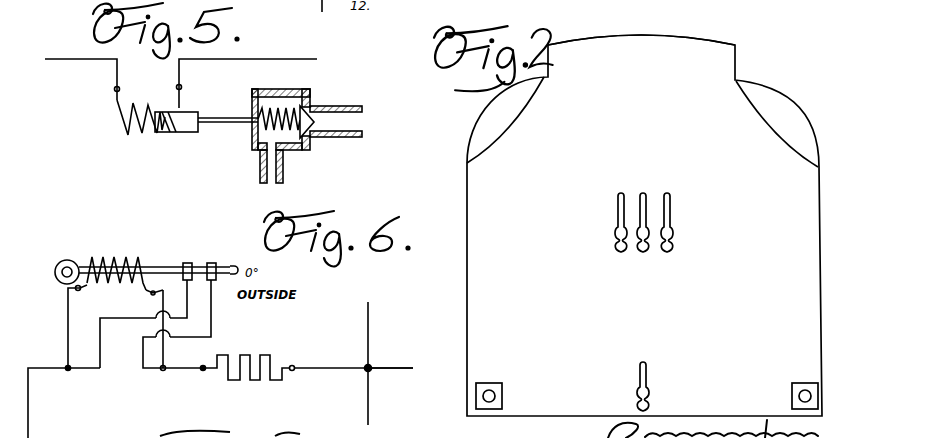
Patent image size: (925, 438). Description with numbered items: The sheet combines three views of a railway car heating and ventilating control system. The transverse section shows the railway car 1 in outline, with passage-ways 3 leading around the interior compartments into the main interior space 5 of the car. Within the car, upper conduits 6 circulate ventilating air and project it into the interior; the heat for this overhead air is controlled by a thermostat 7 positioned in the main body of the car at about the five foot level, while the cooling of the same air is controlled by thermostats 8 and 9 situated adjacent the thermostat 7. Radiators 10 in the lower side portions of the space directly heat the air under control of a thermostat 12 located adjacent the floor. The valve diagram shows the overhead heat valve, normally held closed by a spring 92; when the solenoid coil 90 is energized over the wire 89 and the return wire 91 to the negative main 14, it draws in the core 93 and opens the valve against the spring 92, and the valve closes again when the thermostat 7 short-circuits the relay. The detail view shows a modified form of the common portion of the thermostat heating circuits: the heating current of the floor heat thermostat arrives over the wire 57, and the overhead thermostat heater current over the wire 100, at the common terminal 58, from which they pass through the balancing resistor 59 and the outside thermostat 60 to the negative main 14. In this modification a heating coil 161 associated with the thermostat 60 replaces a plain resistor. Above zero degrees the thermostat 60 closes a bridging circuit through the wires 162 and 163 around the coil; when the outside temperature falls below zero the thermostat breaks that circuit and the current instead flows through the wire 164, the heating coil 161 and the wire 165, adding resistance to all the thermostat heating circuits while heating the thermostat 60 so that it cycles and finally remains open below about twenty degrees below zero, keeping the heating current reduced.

In FIG. 2, the railway car 1 is at (820, 218).
In FIG. 2, the passage-ways 3 is at (647, 22).
In FIG. 2, the main interior space 5 is at (714, 278).
In FIG. 2, the upper conduits 6 is at (505, 110).
In FIG. 2, the overhead heat thermostat 7 is at (616, 218).
In FIG. 2, the cooling thermostat 8 is at (648, 200).
In FIG. 2, the cooling thermostat 9 is at (672, 210).
In FIG. 2, the radiators 10 is at (502, 390).
In FIG. 2, the floor heat thermostat 12 is at (650, 376).
In FIG. 6, the negative main 14 is at (30, 425).
In FIG. 6, the wire 57 is at (403, 370).
In FIG. 6, the terminal 58 is at (370, 366).
In FIG. 6, the balancing resistor 59 is at (268, 353).
In FIG. 6, the outside thermostat 60 is at (182, 254).
In FIG. 5, the wire 89 is at (283, 58).
In FIG. 5, the solenoid coil 90 is at (140, 133).
In FIG. 5, the wire 91 is at (65, 60).
In FIG. 5, the spring 92 is at (293, 103).
In FIG. 5, the core 93 is at (188, 115).
In FIG. 6, the wire 100 is at (367, 407).
In FIG. 6, the heating coil 161 is at (110, 262).
In FIG. 6, the wire 162 is at (213, 320).
In FIG. 6, the wire 163 is at (102, 357).
In FIG. 6, the wire 164 is at (157, 292).
In FIG. 6, the wire 165 is at (68, 318).